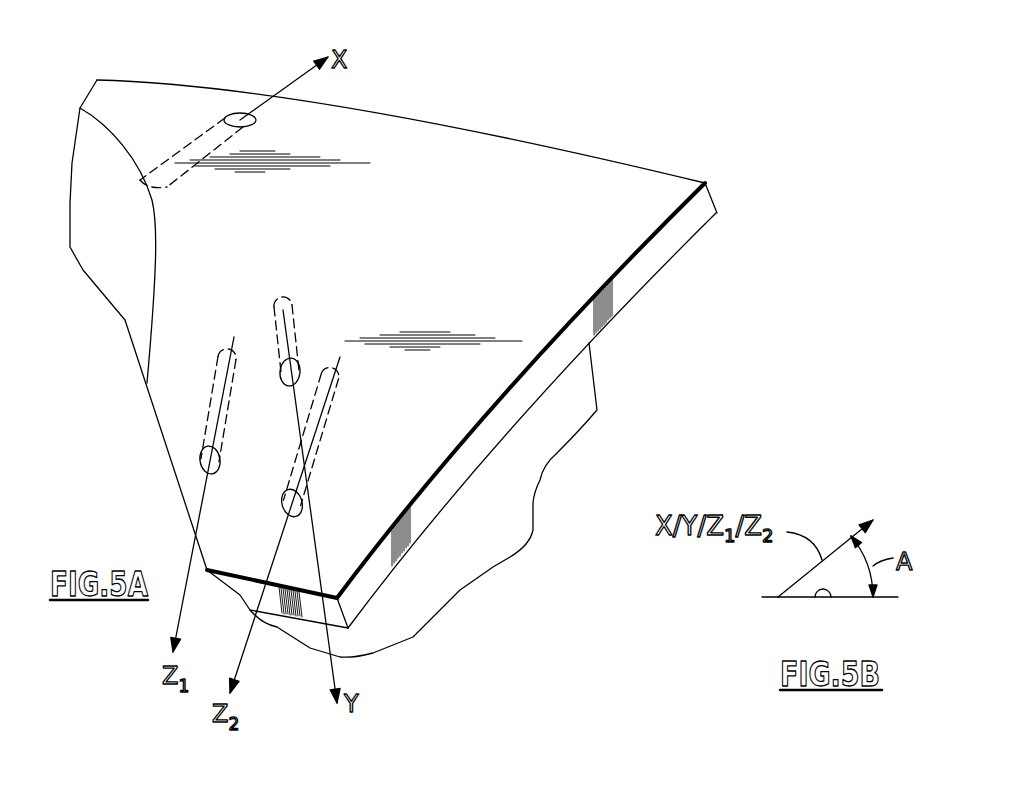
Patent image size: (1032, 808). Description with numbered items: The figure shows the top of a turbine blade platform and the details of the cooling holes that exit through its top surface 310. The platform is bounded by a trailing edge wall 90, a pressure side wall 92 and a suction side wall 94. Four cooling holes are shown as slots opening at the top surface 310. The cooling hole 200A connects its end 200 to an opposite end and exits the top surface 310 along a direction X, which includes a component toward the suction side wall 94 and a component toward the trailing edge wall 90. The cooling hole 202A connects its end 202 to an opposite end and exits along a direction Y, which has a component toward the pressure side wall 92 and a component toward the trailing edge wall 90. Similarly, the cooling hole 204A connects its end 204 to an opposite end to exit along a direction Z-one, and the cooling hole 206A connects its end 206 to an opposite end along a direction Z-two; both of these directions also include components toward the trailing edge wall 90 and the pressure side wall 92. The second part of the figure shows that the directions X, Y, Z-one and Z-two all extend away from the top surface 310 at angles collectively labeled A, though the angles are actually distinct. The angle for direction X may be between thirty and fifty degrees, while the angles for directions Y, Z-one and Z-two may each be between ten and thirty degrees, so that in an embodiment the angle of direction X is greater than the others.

In FIG. 5A, the trailing edge wall 90 is at (647, 263).
In FIG. 5A, the pressure side wall 92 is at (318, 614).
In FIG. 5A, the suction side wall 94 is at (435, 128).
In FIG. 5A, the end of cooling hole 200 is at (233, 116).
In FIG. 5A, the cooling hole 200A is at (168, 187).
In FIG. 5A, the end of cooling hole 202 is at (300, 369).
In FIG. 5A, the cooling hole 202A is at (273, 321).
In FIG. 5A, the end of cooling hole 204 is at (200, 462).
In FIG. 5A, the cooling hole 204A is at (210, 400).
In FIG. 5A, the end of cooling hole 206 is at (286, 510).
In FIG. 5A, the cooling hole 206A is at (328, 423).
In FIG. 5A, the top surface 310 is at (552, 248).
In FIG. 5B, the top surface 310 is at (817, 598).